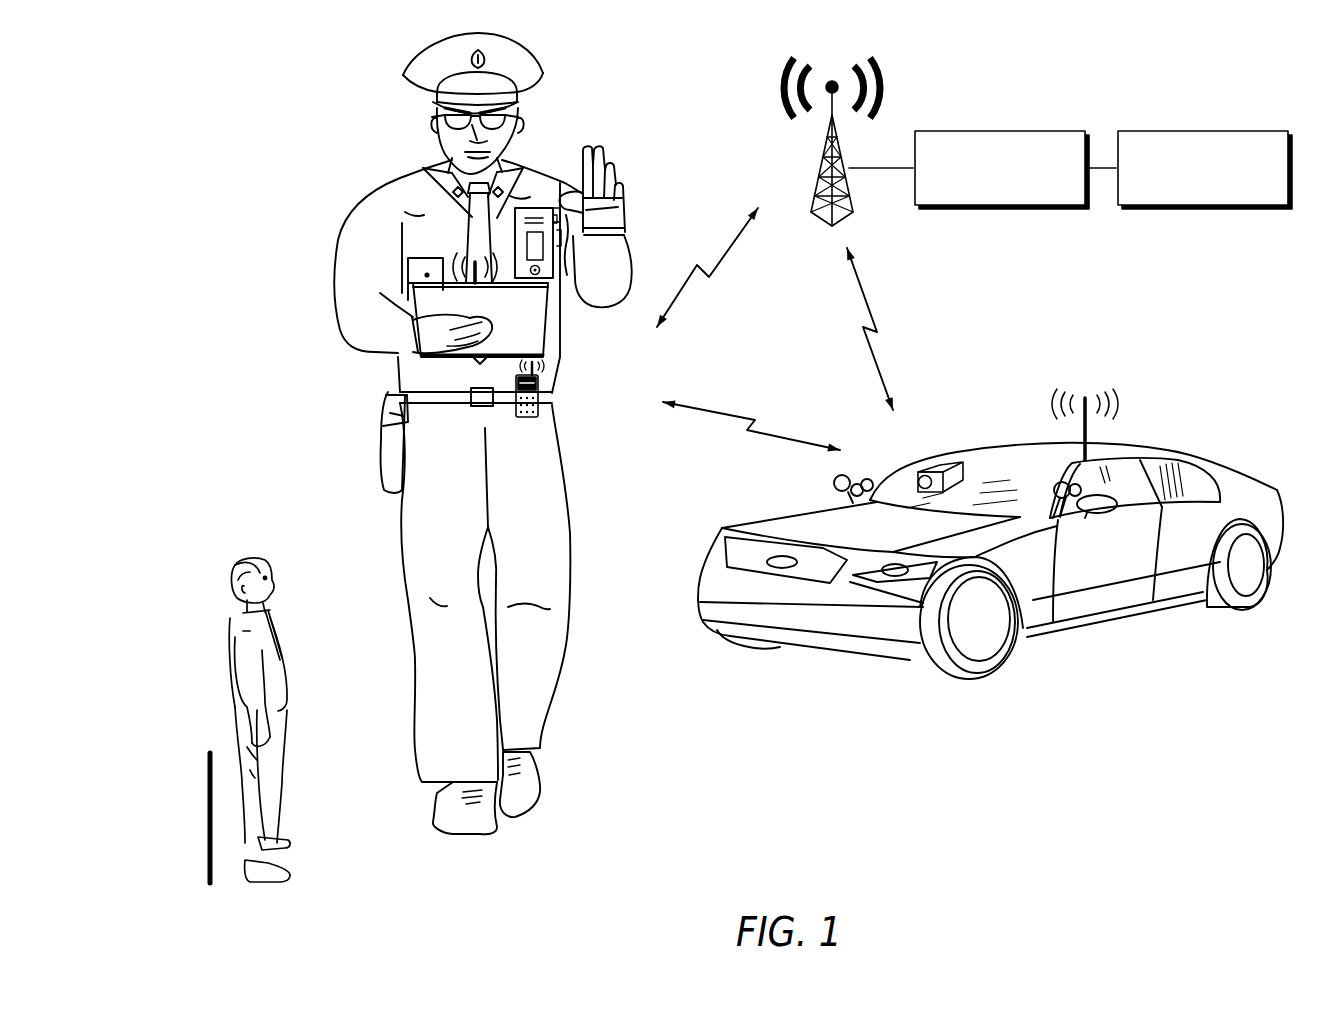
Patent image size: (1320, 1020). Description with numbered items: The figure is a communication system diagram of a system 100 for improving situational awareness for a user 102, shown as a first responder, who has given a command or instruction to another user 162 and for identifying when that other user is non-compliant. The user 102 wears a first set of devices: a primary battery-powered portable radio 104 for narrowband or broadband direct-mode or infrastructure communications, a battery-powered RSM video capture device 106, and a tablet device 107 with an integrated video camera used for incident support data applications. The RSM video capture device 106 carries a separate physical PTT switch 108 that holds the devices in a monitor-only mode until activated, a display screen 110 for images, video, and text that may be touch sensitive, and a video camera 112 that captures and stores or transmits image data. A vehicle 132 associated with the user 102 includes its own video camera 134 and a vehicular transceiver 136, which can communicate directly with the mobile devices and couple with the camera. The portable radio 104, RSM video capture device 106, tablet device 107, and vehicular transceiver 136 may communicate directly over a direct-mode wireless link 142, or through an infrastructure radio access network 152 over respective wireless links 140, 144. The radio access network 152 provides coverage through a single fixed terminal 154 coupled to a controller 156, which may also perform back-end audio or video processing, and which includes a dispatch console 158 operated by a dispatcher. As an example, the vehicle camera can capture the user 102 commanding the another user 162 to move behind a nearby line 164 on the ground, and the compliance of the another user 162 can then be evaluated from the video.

The system 100 is at (276, 54).
The user 102 is at (565, 156).
The portable radio 104 is at (540, 376).
The RSM video capture device 106 is at (548, 208).
The tablet device 107 is at (433, 357).
The PTT switch 108 is at (562, 215).
The display screen 110 is at (562, 237).
The video camera 112 is at (540, 270).
The vehicle 132 is at (1217, 428).
The video camera 134 is at (923, 470).
The vehicular transceiver 136 is at (1090, 443).
The wireless link 140 is at (740, 247).
The direct-mode wireless link 142 is at (727, 413).
The wireless link 144 is at (870, 308).
The infrastructure radio access network 152 is at (757, 97).
The fixed terminal 154 is at (817, 178).
The controller 156 is at (1000, 130).
The dispatch console 158 is at (1203, 130).
The another user 162 is at (233, 637).
The line 164 is at (208, 818).